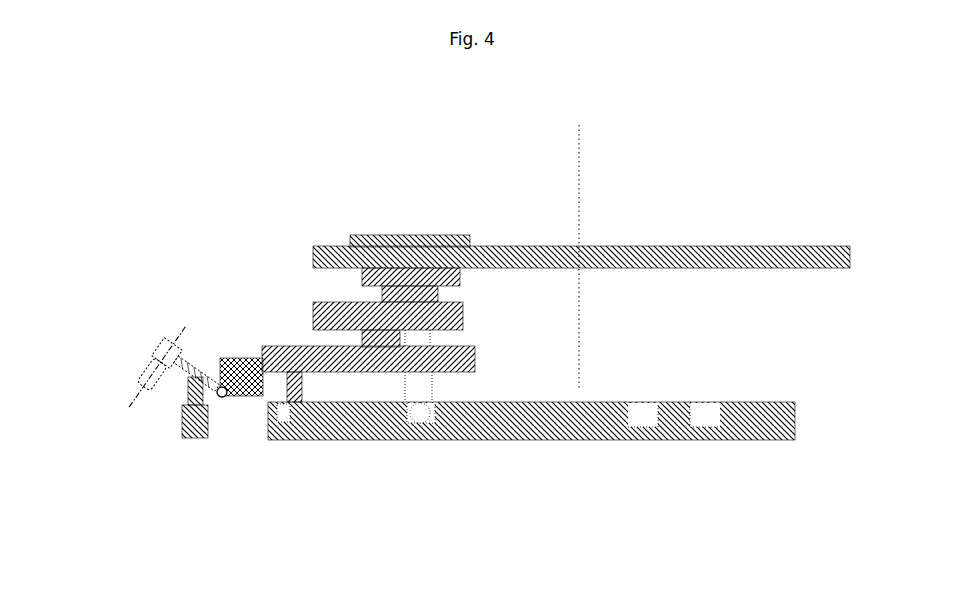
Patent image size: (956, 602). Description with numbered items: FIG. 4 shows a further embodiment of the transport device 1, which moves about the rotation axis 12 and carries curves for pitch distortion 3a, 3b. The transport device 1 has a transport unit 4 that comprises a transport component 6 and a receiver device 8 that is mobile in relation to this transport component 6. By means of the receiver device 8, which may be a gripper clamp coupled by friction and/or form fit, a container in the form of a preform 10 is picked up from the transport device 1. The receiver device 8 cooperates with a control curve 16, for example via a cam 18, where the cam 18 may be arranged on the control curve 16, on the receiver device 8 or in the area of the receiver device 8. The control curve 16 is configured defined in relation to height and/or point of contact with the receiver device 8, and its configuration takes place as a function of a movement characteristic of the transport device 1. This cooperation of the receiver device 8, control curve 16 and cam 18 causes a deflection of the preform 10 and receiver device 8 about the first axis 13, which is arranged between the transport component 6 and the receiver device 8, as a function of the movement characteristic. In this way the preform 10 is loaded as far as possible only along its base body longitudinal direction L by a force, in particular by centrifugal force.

The transport device 1 is at (190, 166).
The transport unit 4 is at (199, 322).
The transport component 6 is at (258, 358).
The receiver device 8 is at (150, 348).
The preform 10 is at (150, 373).
The rotation axis 12 is at (579, 175).
The first axis 13 is at (226, 397).
The control curve 16 is at (192, 430).
The cam 18 is at (193, 393).
The curve for pitch distortion 3a is at (293, 413).
The curve for pitch distortion 3b is at (420, 419).
The optical axis L is at (133, 412).